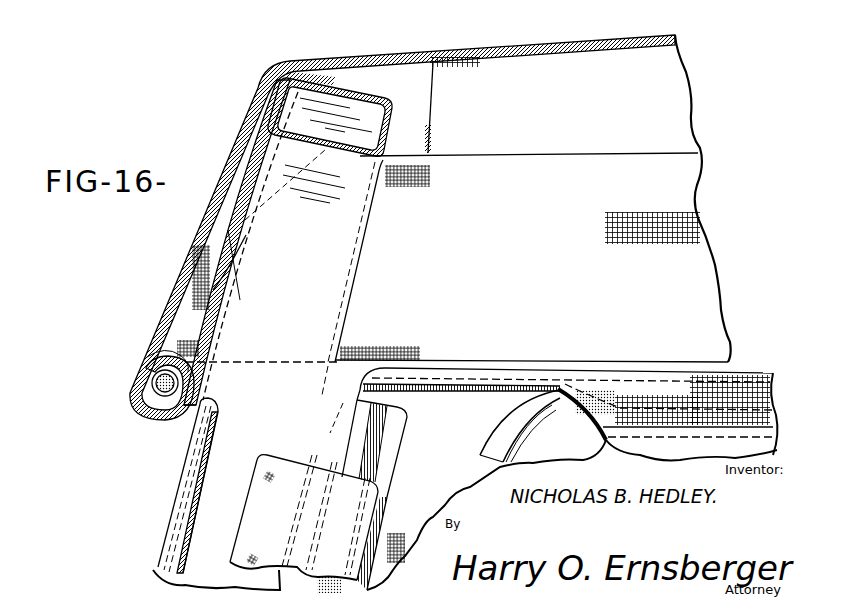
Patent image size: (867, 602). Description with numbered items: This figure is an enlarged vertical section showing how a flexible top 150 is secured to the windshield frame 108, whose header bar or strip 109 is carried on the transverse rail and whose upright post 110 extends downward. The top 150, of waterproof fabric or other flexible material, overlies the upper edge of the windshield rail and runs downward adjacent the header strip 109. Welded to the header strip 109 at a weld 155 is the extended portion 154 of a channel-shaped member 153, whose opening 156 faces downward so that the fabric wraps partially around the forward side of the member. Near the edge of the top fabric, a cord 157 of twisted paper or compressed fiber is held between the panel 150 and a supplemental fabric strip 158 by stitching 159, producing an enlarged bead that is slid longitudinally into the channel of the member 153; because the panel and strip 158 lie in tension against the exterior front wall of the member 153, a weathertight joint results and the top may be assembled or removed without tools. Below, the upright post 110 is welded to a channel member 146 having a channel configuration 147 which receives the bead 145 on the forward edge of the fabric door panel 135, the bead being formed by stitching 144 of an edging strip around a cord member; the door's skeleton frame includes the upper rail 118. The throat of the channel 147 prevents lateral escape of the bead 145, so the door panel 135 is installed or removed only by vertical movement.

The windshield frame 108 is at (390, 55).
The header bar or strip 109 is at (253, 155).
The upright post 110 is at (193, 549).
The upper rail 118 is at (585, 451).
The fabric panel 135 is at (800, 351).
The stitching 144 is at (440, 464).
The bead 145 is at (370, 430).
The channel member 146 is at (315, 473).
The channel configuration 147 is at (435, 504).
The flexible top 150 is at (604, 31).
The channel-shaped member 153 is at (200, 314).
The extended portion 154 is at (217, 297).
The weld 155 is at (278, 339).
The opening 156 is at (187, 406).
The cord 157 is at (157, 383).
The supplemental fabric strip 158 is at (281, 315).
The stitching 159 is at (147, 410).